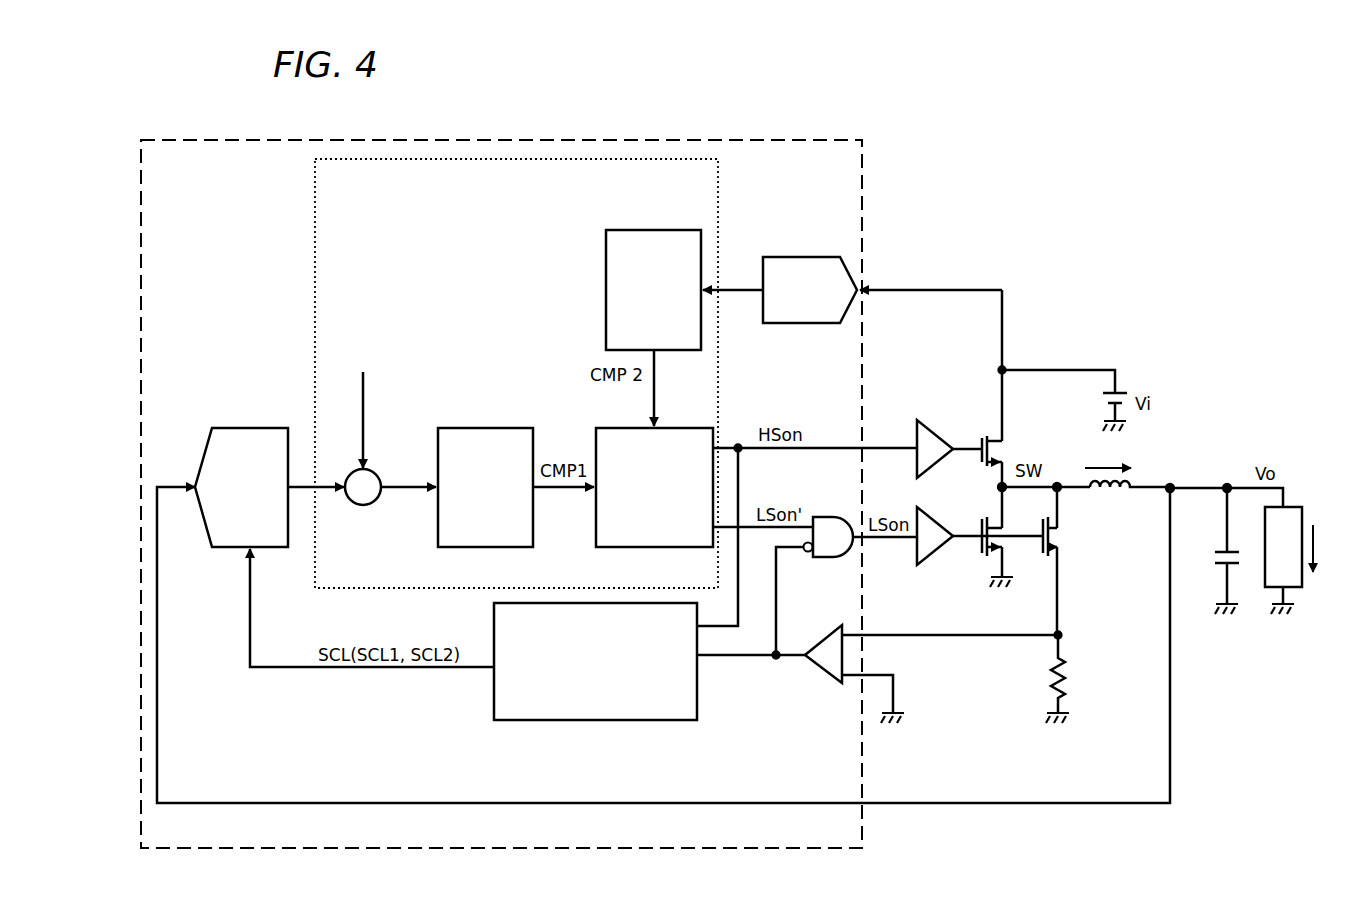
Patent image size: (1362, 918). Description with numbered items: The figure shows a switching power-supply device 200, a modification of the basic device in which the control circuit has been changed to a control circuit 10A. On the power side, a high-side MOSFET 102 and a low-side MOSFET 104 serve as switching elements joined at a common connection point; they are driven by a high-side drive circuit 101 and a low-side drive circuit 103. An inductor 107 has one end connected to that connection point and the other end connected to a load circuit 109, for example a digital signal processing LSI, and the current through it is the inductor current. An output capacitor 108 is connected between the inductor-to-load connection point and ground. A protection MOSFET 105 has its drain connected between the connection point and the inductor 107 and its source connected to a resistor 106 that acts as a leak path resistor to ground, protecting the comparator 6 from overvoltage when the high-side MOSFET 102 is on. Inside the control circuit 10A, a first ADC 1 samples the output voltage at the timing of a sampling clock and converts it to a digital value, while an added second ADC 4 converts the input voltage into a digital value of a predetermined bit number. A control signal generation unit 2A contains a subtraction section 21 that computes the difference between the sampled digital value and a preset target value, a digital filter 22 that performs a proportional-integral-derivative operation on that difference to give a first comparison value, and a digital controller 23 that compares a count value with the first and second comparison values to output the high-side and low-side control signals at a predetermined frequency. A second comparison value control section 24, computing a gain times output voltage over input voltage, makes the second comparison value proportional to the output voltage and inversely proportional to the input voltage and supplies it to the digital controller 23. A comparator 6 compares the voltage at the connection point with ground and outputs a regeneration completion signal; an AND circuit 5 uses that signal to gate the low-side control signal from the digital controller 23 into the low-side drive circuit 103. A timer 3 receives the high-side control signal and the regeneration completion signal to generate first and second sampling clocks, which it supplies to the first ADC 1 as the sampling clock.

The first ADC 1 is at (228, 548).
The control signal generation unit 2A is at (718, 228).
The timer 3 is at (492, 710).
The second ADC 4 is at (850, 270).
The AND circuit 5 is at (828, 516).
The comparator 6 is at (824, 672).
The control circuit 10A is at (818, 140).
The subtraction section 21 is at (363, 506).
The digital filter 22 is at (475, 428).
The digital controller 23 is at (670, 428).
The second comparison value control section 24 is at (640, 230).
The high-side drive circuit 101 is at (918, 430).
The high-side MOSFET 102 is at (983, 434).
The low-side drive circuit 103 is at (932, 566).
The low-side MOSFET 104 is at (987, 556).
The protection MOSFET 105 is at (1042, 556).
The resistor 106 is at (1064, 677).
The inductor 107 is at (1112, 494).
The output capacitor 108 is at (1218, 568).
The load circuit 109 is at (1318, 500).
The switching power-supply device 200 is at (995, 172).